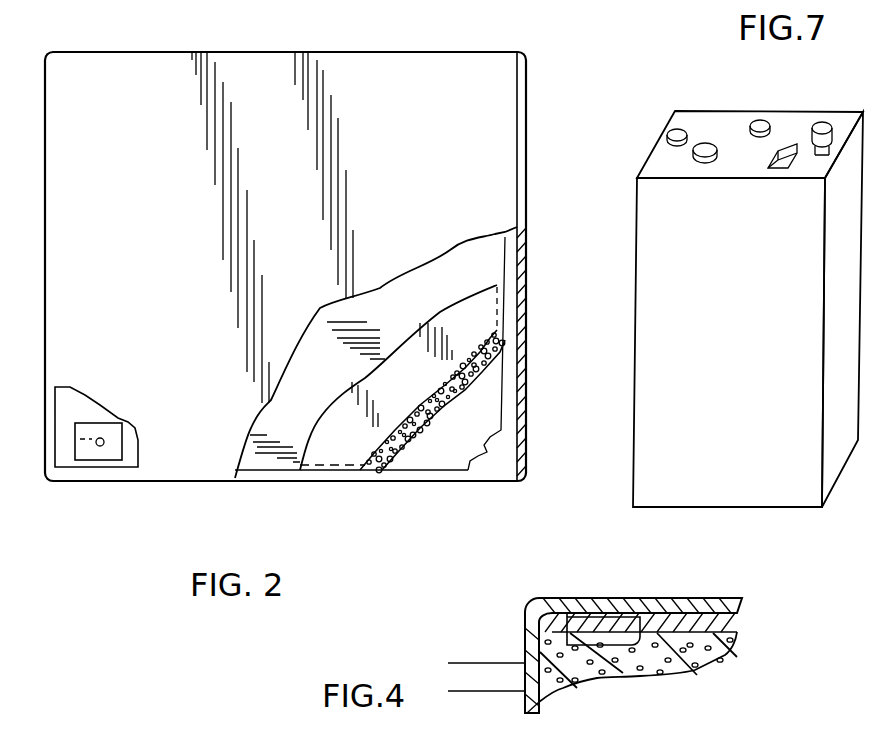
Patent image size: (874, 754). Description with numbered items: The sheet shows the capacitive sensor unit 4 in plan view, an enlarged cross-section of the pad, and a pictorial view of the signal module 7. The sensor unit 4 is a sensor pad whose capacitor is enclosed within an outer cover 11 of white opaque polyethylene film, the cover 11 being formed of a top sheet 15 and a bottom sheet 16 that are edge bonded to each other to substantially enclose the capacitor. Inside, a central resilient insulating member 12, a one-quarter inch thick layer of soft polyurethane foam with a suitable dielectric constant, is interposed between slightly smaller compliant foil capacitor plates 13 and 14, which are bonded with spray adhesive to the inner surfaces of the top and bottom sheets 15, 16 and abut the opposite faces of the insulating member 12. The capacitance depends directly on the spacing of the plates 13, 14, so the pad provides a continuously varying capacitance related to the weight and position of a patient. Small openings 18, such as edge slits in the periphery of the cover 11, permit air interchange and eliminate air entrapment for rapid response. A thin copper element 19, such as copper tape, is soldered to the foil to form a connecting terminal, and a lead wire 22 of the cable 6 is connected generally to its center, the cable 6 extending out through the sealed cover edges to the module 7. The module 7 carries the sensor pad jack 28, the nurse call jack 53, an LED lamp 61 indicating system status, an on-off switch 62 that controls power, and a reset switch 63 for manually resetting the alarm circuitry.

In FIG. 2, the capacitive sensor unit 4 is at (550, 117).
In FIG. 2, the cable 6 is at (85, 430).
In FIG. 7, the signal module 7 is at (632, 384).
In FIG. 2, the outer cover 11 is at (499, 476).
In FIG. 4, the outer cover 11 is at (643, 597).
In FIG. 2, the insulating member 12 is at (475, 325).
In FIG. 4, the insulating member 12 is at (683, 676).
In FIG. 2, the capacitor plate 13 is at (483, 268).
In FIG. 4, the capacitor plate 13 is at (737, 626).
In FIG. 2, the capacitor plate 14 is at (68, 424).
In FIG. 2, the top polyethylene film sheet 15 is at (497, 197).
In FIG. 2, the bottom polyethylene film sheet 16 is at (115, 481).
In FIG. 2, the small openings 18 is at (523, 350).
In FIG. 2, the copper element 19 is at (113, 442).
In FIG. 4, the copper element 19 is at (600, 640).
In FIG. 4, the lead wire 22 is at (488, 662).
In FIG. 7, the sensor pad jack 28 is at (671, 130).
In FIG. 7, the nurse call jack 53 is at (707, 146).
In FIG. 7, the LED lamp 61 is at (759, 122).
In FIG. 7, the on-off switch 62 is at (788, 148).
In FIG. 7, the reset switch 63 is at (824, 123).